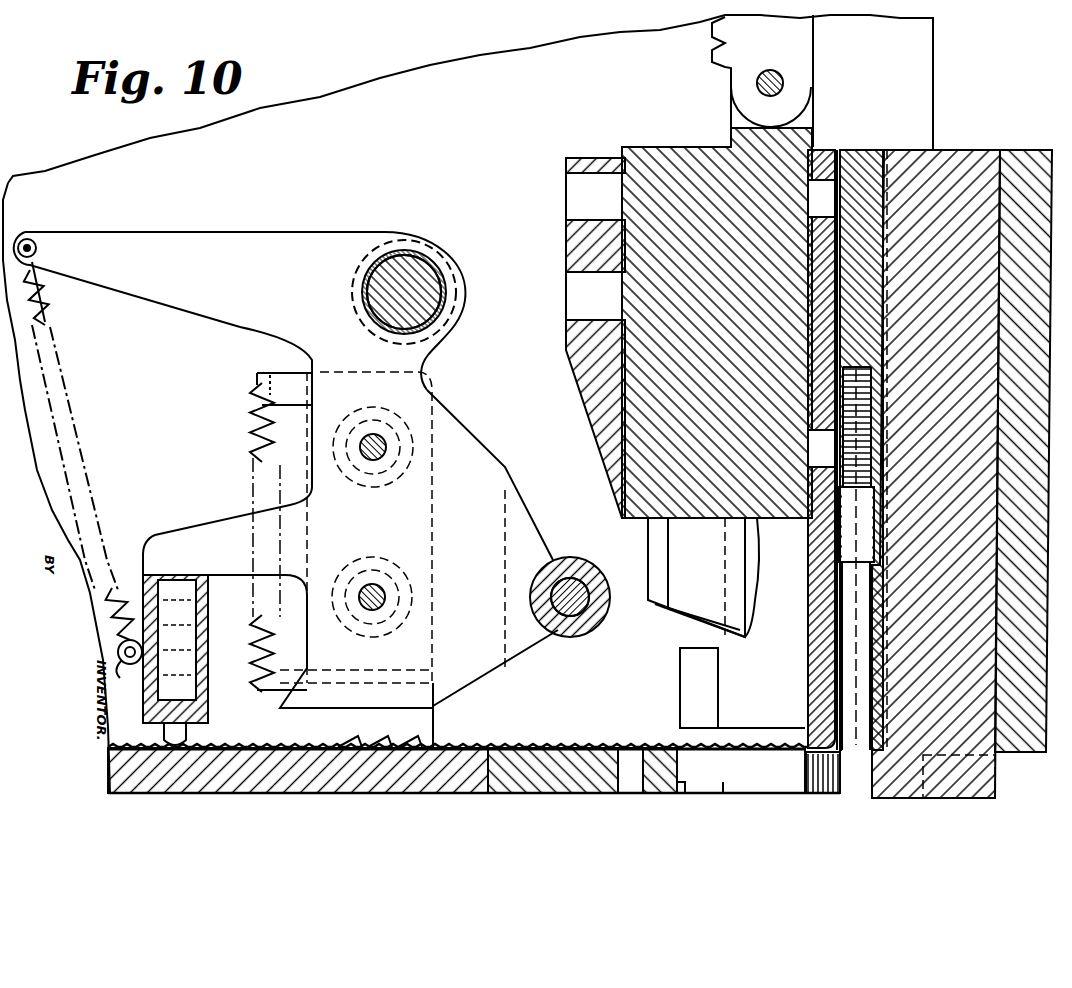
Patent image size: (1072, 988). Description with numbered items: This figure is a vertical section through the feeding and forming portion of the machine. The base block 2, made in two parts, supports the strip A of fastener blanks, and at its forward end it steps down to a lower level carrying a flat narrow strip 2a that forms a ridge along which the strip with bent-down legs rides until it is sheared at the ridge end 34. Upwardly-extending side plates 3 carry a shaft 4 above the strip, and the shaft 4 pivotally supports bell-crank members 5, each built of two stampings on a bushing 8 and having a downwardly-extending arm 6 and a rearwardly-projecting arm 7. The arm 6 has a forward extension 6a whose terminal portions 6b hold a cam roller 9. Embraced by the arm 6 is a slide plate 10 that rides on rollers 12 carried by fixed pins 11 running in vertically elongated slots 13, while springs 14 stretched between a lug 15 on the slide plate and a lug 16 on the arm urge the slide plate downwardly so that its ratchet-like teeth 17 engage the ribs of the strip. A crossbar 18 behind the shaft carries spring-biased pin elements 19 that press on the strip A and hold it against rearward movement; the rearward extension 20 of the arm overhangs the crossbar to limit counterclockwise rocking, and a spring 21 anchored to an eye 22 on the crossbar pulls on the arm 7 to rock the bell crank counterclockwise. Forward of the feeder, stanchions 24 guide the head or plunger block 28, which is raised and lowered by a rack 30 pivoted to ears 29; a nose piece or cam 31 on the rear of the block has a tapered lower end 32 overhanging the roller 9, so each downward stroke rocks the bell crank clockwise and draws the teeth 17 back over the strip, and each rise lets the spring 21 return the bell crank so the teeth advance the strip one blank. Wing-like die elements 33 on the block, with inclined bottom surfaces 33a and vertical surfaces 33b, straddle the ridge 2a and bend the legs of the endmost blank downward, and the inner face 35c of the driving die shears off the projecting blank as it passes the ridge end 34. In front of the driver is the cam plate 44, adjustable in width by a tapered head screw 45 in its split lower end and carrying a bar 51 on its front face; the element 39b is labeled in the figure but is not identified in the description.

The base block 2 is at (485, 760).
The flat narrow strip 2a is at (580, 762).
The side plates 3 is at (470, 75).
The shaft 4 is at (440, 282).
The bell-crank members 5 is at (400, 238).
The downwardly-extending arm 6 is at (430, 388).
The forward extension 6a is at (545, 478).
The terminal portions 6b is at (592, 672).
The rearwardly-projecting arm 7 is at (160, 234).
The bushing 8 is at (448, 312).
The cam roller 9 is at (590, 580).
The slide plate 10 is at (440, 540).
The fixed pins 11 is at (386, 447).
The rollers 12 is at (398, 427).
The vertically elongated slots 13 is at (395, 470).
The springs 14 is at (248, 436).
The lug 15 is at (285, 375).
The lug 16 is at (288, 710).
The ratchet-like teeth 17 is at (430, 722).
The crossbar 18 is at (210, 690).
The spring biased pin elements 19 is at (160, 740).
The rearward extension 20 is at (192, 540).
The spring 21 is at (52, 313).
The eye 22 is at (126, 643).
The stanchions 24 is at (680, 680).
The operating head or block 28 is at (700, 146).
The ears 29 is at (812, 124).
The rack 30 is at (810, 45).
The nose piece or cam 31 is at (575, 258).
The tapered lower end 32 is at (605, 482).
The wing-like die elements 33 is at (742, 540).
The inclined bottom surfaces 33a is at (700, 628).
The vertical surfaces 33b is at (652, 543).
The end of the ridge 34 is at (838, 775).
The inner face 35c is at (806, 697).
The frame wall 39b is at (1028, 152).
The cam plate 44 is at (866, 150).
The tapered head screw 45 is at (842, 440).
The bar 51 is at (970, 150).
The strip A is at (222, 744).